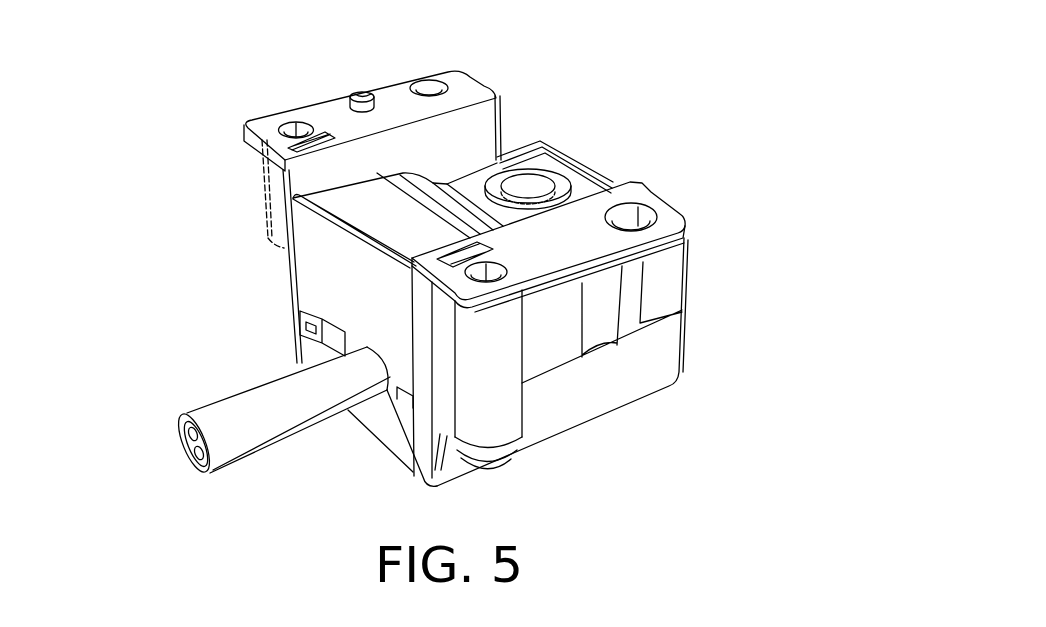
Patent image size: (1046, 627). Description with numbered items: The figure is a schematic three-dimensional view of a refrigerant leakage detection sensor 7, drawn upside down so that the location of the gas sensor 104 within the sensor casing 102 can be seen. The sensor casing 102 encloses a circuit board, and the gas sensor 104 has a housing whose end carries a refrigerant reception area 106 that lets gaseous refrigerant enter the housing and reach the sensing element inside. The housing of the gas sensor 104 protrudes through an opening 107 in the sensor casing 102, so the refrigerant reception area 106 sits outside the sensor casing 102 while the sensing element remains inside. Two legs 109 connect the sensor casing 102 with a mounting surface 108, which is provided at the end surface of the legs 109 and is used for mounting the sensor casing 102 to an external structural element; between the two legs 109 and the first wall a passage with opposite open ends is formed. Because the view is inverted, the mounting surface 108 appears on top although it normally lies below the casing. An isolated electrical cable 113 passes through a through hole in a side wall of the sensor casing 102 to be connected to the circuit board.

The refrigerant leakage detection sensor 7 is at (205, 95).
The sensor casing 102 is at (712, 200).
The gas sensor 104 is at (580, 182).
The refrigerant reception area 106 is at (537, 188).
The opening 107 is at (493, 206).
The mounting surface 108 is at (560, 253).
The legs 109 is at (465, 125).
The isolated electrical cable 113 is at (293, 400).